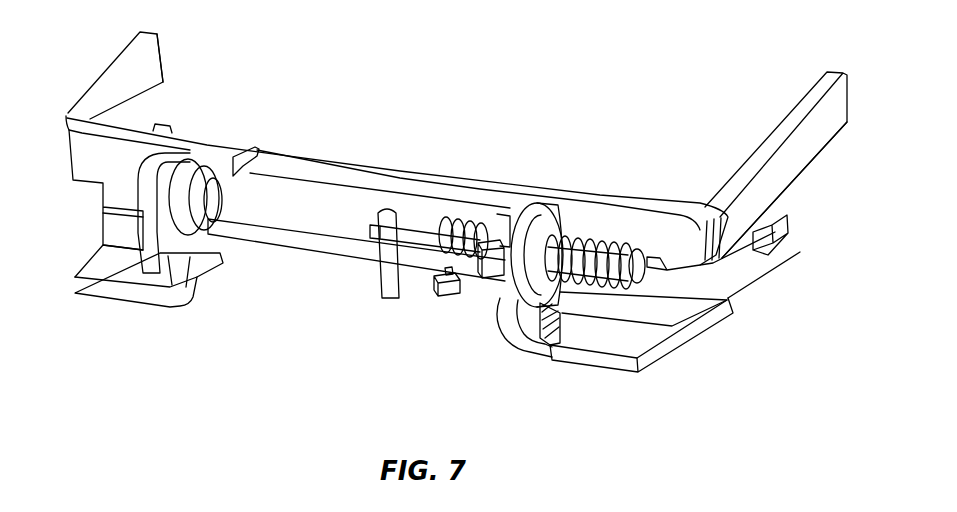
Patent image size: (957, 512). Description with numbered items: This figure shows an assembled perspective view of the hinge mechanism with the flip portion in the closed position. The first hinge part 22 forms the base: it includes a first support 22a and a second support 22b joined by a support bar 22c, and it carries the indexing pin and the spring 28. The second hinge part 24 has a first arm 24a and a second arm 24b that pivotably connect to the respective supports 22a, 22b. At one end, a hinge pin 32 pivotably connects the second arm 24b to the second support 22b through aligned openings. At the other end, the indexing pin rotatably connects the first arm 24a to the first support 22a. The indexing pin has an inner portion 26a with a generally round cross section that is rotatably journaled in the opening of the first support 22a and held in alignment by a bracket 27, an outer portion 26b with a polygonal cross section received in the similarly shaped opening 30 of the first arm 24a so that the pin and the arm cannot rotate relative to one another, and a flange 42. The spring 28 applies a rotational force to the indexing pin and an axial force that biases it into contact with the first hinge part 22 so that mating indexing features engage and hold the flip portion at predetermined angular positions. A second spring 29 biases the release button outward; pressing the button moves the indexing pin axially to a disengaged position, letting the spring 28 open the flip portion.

The first hinge part 22 is at (518, 136).
The first support 22a is at (620, 377).
The second support 22b is at (117, 302).
The support bar 22c is at (355, 255).
The second hinge part 24 is at (178, 60).
The first arm 24a is at (803, 170).
The second arm 24b is at (153, 95).
The inner portion 26a is at (418, 268).
The outer portion 26b is at (540, 262).
The bracket 27 is at (392, 283).
The spring 28 is at (460, 228).
The second spring 29 is at (617, 290).
The opening 30 is at (549, 240).
The hinge pin 32 is at (212, 202).
The flange 42 is at (492, 270).